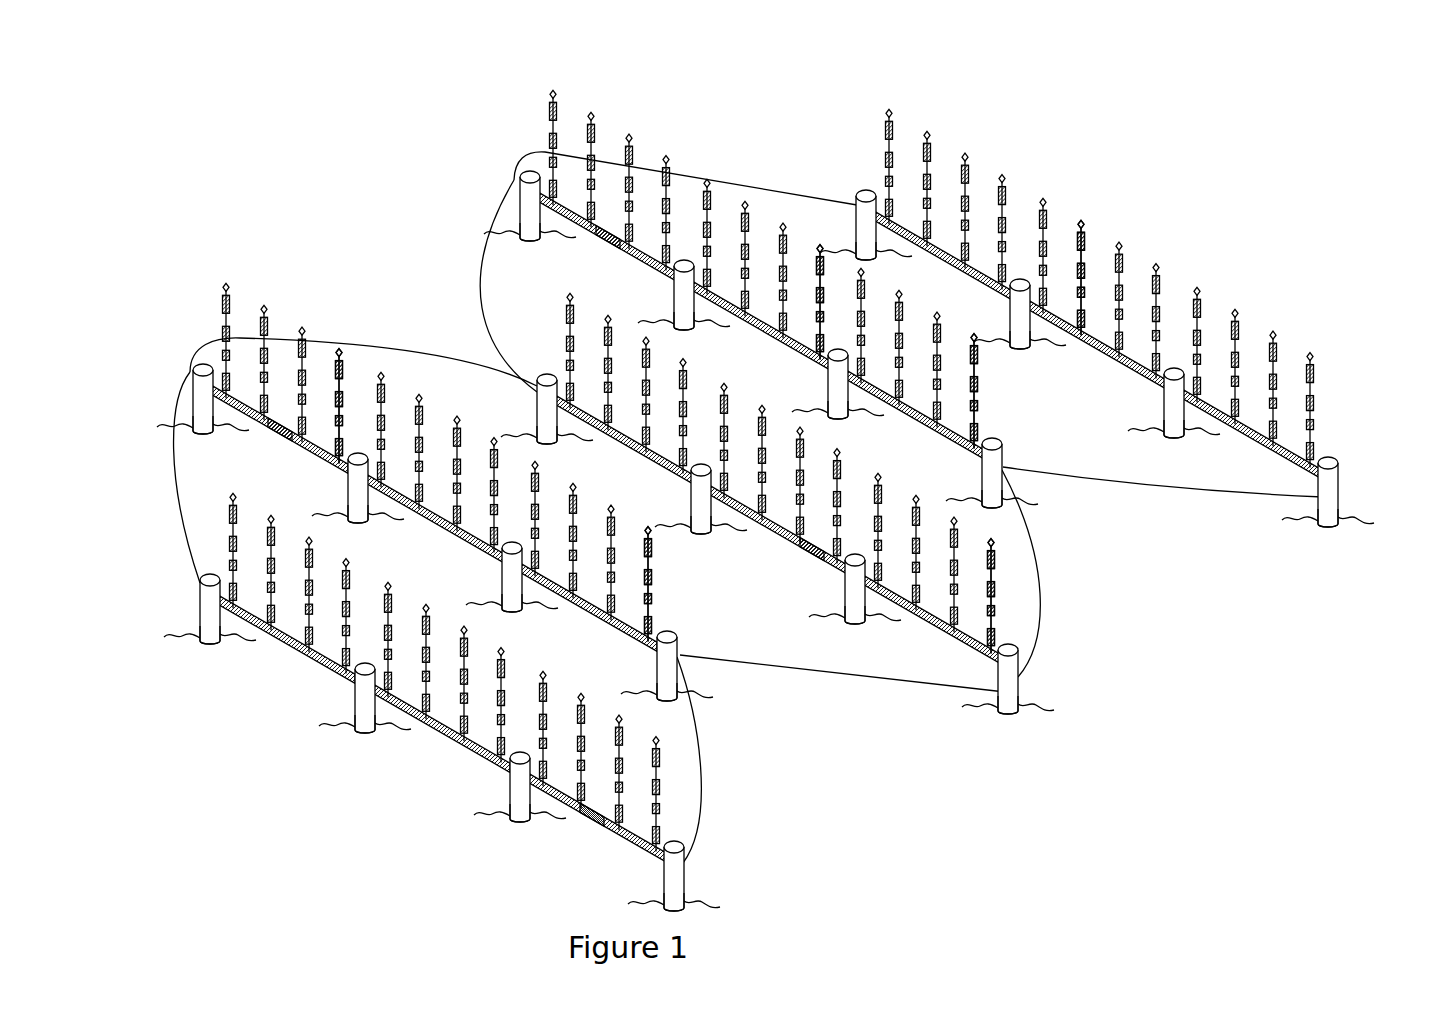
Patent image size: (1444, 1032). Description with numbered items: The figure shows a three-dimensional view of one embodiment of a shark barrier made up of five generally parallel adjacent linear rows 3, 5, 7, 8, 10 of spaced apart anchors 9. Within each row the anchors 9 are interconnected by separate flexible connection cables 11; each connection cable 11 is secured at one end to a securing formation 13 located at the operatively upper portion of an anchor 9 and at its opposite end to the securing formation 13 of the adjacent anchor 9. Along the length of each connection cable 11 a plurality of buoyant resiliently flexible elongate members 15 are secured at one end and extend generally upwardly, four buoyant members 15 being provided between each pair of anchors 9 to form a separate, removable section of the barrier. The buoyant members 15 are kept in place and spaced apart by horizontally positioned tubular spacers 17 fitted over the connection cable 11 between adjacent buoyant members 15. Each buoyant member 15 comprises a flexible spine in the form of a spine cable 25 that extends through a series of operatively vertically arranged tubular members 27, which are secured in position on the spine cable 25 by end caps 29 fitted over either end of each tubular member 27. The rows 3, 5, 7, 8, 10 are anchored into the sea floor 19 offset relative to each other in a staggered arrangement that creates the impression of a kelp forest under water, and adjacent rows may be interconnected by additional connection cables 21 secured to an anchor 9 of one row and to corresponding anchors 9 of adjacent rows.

The linear row 3 is at (735, 860).
The linear row 5 is at (177, 342).
The linear row 7 is at (1052, 638).
The linear row 8 is at (1035, 438).
The linear row 10 is at (1330, 390).
The anchor 9 is at (360, 737).
The connection cable 11 is at (621, 259).
The securing formation 13 is at (1002, 460).
The buoyant resiliently flexible elongate member 15 is at (667, 150).
The spacer 17 is at (608, 248).
The sea floor 19 is at (515, 236).
The additional connection cable 21 is at (170, 474).
The spine cable 25 is at (604, 165).
The tubular member 27 is at (347, 367).
The end cap 29 is at (818, 241).